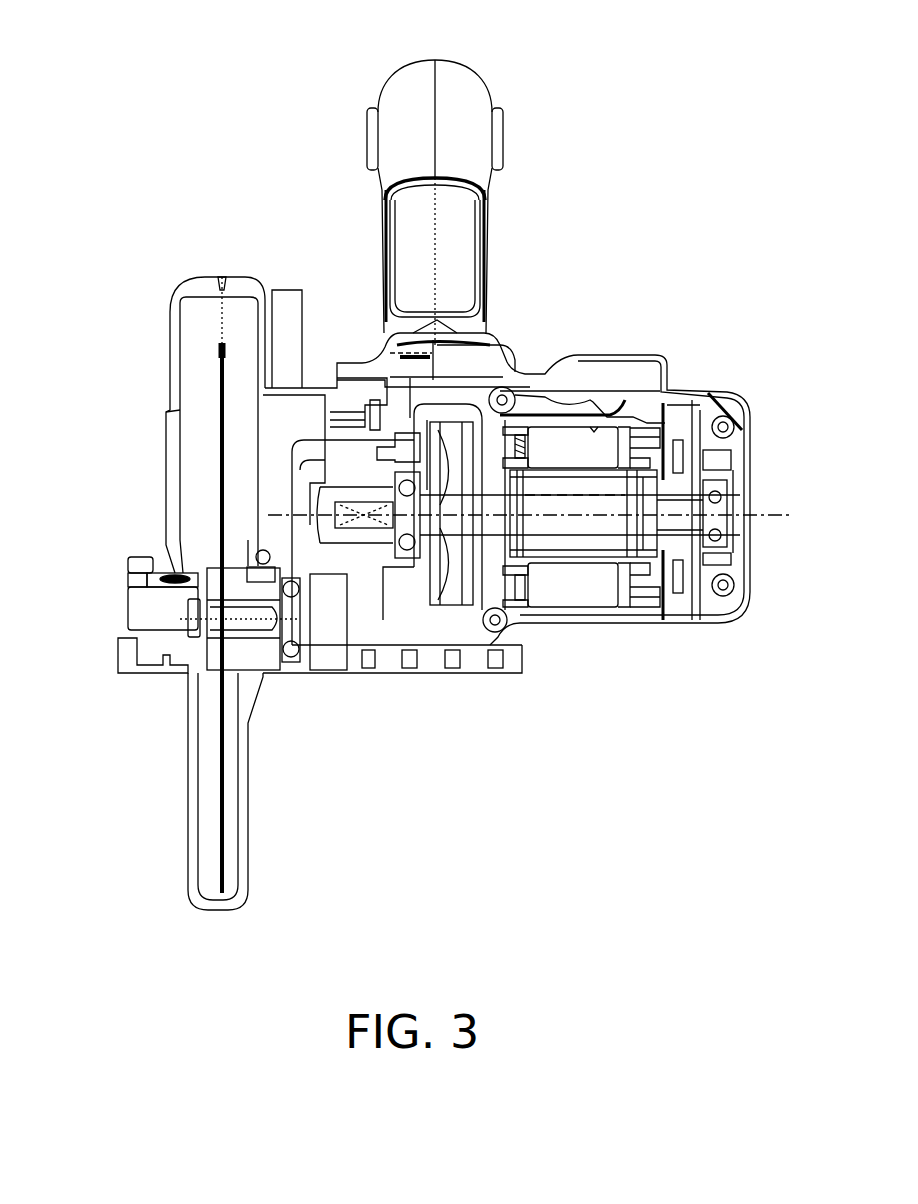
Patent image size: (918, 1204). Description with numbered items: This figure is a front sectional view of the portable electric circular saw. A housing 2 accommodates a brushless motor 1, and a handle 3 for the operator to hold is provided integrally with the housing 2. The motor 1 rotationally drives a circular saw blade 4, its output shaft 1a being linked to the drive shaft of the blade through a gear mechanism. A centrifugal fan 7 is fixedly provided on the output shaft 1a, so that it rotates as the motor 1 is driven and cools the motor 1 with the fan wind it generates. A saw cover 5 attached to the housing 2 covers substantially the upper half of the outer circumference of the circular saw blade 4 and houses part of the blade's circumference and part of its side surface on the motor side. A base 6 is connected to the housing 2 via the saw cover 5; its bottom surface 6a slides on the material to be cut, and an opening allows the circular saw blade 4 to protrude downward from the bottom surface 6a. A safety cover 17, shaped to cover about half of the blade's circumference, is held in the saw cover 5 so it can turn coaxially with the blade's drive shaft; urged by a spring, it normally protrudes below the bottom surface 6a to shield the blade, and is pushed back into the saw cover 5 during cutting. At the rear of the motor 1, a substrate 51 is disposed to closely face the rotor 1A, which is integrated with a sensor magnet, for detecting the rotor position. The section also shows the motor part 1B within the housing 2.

The brushless motor 1 is at (600, 388).
The output shaft 1a is at (472, 500).
The rotor 1A is at (558, 475).
The rotor 1B is at (588, 597).
The housing 2 is at (530, 628).
The handle 3 is at (467, 75).
The circular saw blade 4 is at (224, 822).
The saw cover 5 is at (208, 276).
The base 6 is at (140, 675).
The bottom surface 6a is at (420, 675).
The centrifugal fan 7 is at (455, 600).
The safety cover 17 is at (249, 890).
The substrate 51 is at (690, 400).